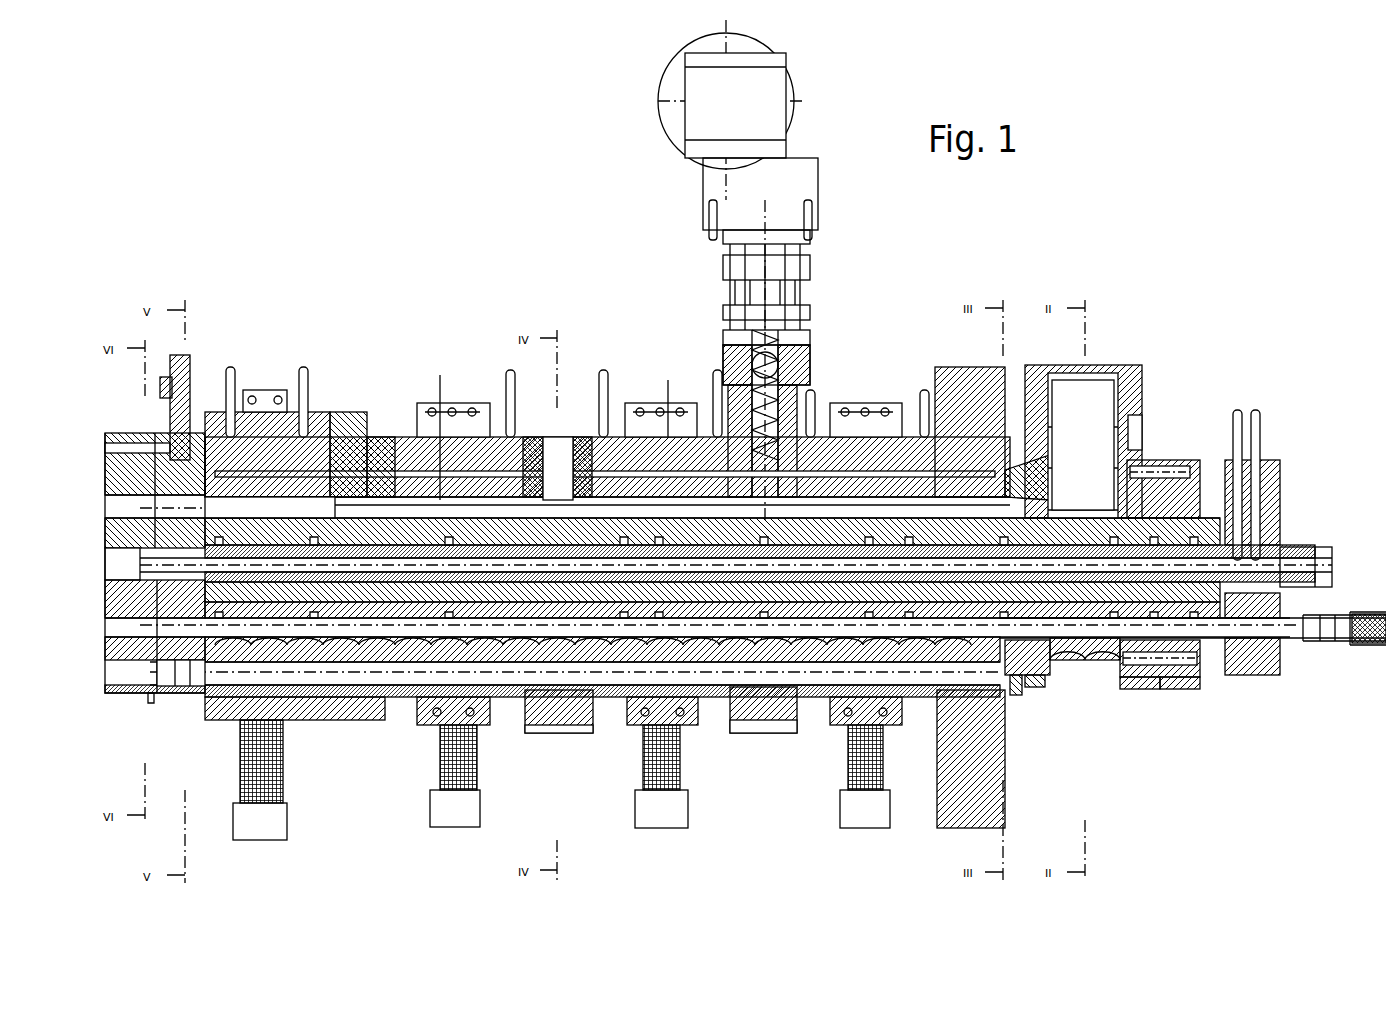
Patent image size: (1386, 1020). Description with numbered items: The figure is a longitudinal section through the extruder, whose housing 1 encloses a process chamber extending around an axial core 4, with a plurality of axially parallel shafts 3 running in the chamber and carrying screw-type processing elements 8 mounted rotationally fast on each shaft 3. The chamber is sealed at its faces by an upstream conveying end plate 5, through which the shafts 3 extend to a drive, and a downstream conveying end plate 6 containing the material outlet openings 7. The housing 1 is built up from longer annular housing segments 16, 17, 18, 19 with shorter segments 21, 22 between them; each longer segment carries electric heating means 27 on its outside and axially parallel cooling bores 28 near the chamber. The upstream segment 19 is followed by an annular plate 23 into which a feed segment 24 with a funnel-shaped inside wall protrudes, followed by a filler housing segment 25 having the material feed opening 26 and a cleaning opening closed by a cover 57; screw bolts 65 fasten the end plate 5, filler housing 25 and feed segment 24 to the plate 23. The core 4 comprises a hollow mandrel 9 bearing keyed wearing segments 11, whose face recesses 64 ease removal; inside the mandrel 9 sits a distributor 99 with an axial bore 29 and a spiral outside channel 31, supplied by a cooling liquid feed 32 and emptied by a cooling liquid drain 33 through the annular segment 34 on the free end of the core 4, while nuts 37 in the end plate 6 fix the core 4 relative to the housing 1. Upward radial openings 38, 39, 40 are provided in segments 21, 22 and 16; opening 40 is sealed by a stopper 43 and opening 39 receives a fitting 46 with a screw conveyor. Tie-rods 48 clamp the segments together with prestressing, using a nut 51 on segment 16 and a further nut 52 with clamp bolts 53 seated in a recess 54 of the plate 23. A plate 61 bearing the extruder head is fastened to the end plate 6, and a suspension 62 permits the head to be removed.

The housing 1 is at (438, 385).
The shafts 3 is at (340, 700).
The axial core 4 is at (1318, 523).
The upstream conveying end plate 5 is at (1170, 677).
The downstream conveying end plate 6 is at (200, 440).
The material outlet openings 7 is at (105, 672).
The processing elements 8 is at (325, 700).
The mandrel 9 is at (1150, 680).
The segments 11 is at (1185, 680).
The downstream conveying housing segment 16 is at (258, 370).
The housing segment 17 is at (450, 390).
The housing segment 18 is at (645, 385).
The upstream conveying housing segment 19 is at (856, 390).
The shorter housing segment 21 is at (572, 380).
The shorter housing segment 22 is at (748, 726).
The annular plate 23 is at (945, 828).
The feed segment 24 is at (953, 365).
The filler housing segment 25 is at (1150, 367).
The material feed opening 26 is at (1068, 460).
The electric heating means 27 is at (668, 425).
The cooling bores 28 is at (390, 430).
The axial bore 29 is at (640, 575).
The spiral outside channel 31 is at (270, 722).
The cooling liquid feed 32 is at (1240, 420).
The cooling liquid drain 33 is at (1283, 460).
The annular segment 34 is at (1280, 675).
The nuts 37 is at (110, 627).
The radial opening 38 is at (520, 440).
The radial opening 39 is at (800, 410).
The radial opening 40 is at (355, 430).
The stopper 43 is at (325, 500).
The fitting 46 is at (805, 308).
The tie-rods 48 is at (480, 680).
The nut 51 is at (180, 693).
The further nut 52 is at (1020, 708).
The clamp bolts 53 is at (1012, 690).
The recess 54 is at (1012, 670).
The cover 57 is at (1087, 662).
The plate 61 is at (105, 433).
The suspension 62 is at (186, 392).
The recesses 64 is at (548, 600).
The screw bolts 65 is at (1150, 455).
The distributor 99 is at (1313, 587).